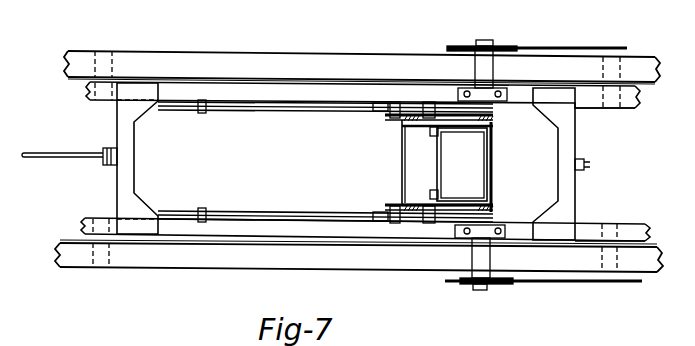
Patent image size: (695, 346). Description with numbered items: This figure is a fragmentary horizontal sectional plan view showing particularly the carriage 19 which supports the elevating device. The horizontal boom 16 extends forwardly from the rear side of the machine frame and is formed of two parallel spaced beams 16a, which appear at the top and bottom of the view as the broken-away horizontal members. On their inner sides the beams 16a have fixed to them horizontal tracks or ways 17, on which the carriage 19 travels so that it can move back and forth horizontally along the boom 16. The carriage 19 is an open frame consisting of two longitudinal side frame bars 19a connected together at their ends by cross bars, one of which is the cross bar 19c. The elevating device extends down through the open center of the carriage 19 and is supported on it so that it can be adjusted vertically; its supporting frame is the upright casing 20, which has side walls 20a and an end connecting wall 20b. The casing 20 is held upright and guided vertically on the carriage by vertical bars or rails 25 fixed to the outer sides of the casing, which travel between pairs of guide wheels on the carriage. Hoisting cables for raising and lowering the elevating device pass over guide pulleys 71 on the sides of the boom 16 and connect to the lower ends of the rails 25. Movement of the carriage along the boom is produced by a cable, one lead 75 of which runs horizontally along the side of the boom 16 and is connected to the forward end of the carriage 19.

The horizontal boom 16 is at (359, 153).
The beams 16a is at (357, 65).
The horizontal tracks or ways 17 is at (598, 70).
The carriage 19 is at (337, 95).
The longitudinal side frame bars 19a is at (320, 213).
The cross bar 19c is at (127, 172).
The upright casing 20 is at (469, 232).
The side walls 20a is at (411, 203).
The end connecting wall 20b is at (495, 166).
The vertical bars or rails 25 is at (410, 110).
The guide pulleys 71 is at (502, 46).
The lead of the cable 75 is at (70, 160).